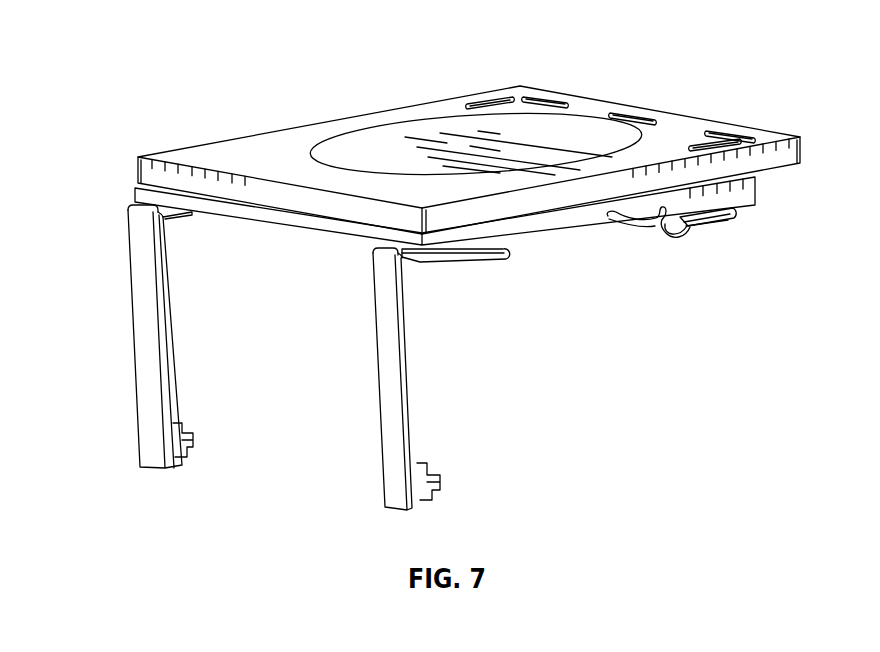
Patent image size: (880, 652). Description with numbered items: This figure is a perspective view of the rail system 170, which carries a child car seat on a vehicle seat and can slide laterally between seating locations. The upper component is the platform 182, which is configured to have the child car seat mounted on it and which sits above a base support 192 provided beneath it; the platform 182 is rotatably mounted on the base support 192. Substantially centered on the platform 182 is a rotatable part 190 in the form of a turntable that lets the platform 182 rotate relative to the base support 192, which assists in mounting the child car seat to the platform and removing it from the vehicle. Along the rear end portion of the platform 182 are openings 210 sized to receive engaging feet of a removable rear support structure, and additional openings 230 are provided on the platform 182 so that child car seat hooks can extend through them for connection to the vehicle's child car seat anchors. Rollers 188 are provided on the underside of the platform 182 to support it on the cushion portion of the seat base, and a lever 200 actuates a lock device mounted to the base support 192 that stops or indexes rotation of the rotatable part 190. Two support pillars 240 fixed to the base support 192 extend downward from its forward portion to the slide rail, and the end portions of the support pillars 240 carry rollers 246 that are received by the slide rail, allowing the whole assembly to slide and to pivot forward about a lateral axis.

The rail system 170 is at (142, 129).
The platform 182 is at (226, 141).
The rotatable part 190 is at (342, 150).
The openings 230 is at (480, 96).
The openings 210 is at (548, 96).
The base support 192 is at (604, 222).
The rollers 188 is at (703, 226).
The lever 200 is at (467, 264).
The support pillars 240 is at (150, 353).
The rollers 246 is at (192, 440).